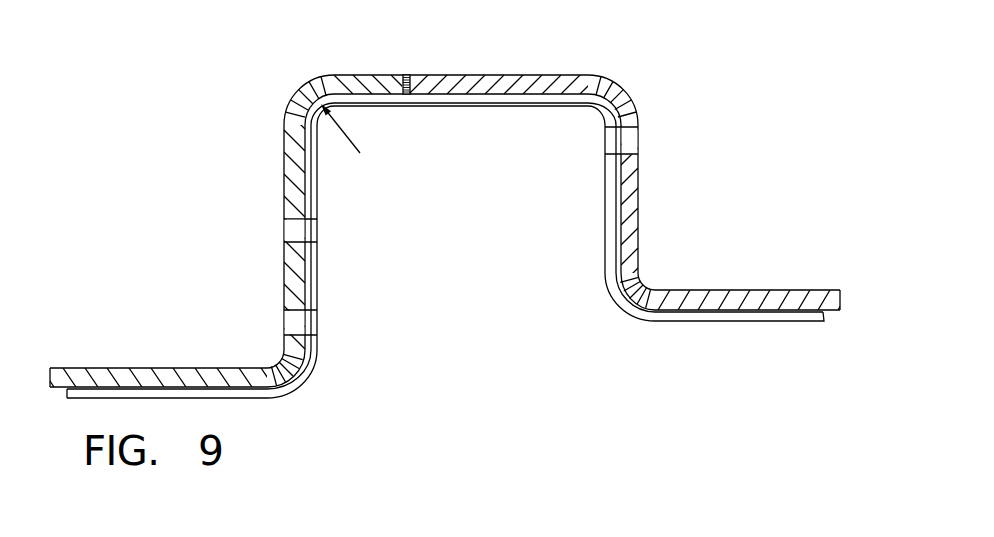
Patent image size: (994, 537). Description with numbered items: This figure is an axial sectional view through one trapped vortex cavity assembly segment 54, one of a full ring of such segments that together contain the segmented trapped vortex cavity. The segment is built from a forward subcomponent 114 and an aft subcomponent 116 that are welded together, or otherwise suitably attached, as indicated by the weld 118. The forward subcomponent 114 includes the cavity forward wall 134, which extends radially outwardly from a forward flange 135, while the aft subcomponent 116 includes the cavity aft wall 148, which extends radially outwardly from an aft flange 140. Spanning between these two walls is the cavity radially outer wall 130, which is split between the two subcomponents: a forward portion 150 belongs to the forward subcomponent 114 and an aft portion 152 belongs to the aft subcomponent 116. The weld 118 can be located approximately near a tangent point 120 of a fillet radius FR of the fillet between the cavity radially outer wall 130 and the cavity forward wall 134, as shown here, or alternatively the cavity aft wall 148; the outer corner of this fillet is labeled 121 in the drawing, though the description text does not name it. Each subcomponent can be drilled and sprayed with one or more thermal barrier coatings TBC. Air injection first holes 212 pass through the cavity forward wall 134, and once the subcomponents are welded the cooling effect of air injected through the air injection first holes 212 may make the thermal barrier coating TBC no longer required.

The trapped vortex cavity assembly segment 54 is at (720, 78).
The forward subcomponent 114 is at (285, 160).
The aft subcomponent 116 is at (637, 210).
The weld 118 is at (407, 75).
The tangent point 120 is at (336, 105).
The outer corner 121 is at (303, 92).
The cavity radially outer wall 130 is at (550, 75).
The cavity forward wall 134 is at (285, 190).
The forward flange 135 is at (165, 368).
The aft flange 140 is at (751, 291).
The cavity aft wall 148 is at (637, 253).
The forward portion of the cavity radially outer wall 150 is at (358, 72).
The aft portion of the cavity radially outer wall 152 is at (460, 75).
The air injection first holes 212 is at (313, 233).
The fillet radius FR is at (352, 147).
The thermal barrier coating TBC is at (293, 382).